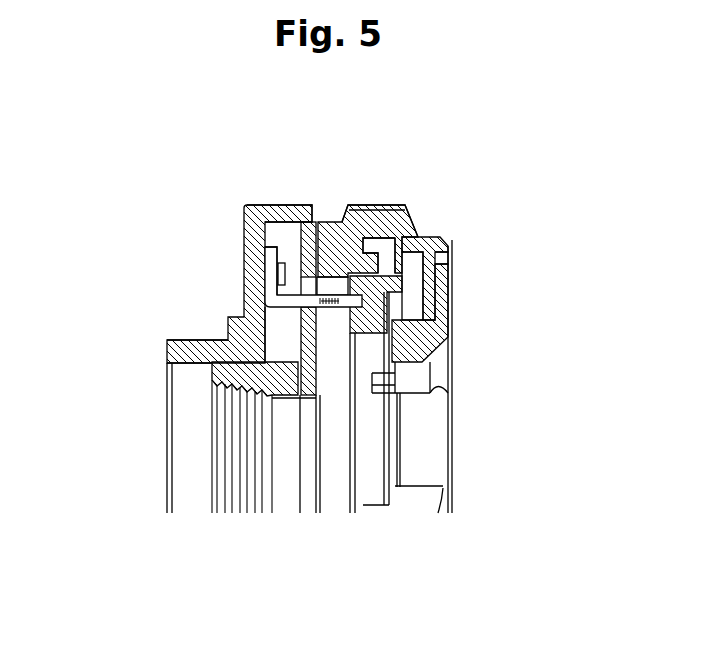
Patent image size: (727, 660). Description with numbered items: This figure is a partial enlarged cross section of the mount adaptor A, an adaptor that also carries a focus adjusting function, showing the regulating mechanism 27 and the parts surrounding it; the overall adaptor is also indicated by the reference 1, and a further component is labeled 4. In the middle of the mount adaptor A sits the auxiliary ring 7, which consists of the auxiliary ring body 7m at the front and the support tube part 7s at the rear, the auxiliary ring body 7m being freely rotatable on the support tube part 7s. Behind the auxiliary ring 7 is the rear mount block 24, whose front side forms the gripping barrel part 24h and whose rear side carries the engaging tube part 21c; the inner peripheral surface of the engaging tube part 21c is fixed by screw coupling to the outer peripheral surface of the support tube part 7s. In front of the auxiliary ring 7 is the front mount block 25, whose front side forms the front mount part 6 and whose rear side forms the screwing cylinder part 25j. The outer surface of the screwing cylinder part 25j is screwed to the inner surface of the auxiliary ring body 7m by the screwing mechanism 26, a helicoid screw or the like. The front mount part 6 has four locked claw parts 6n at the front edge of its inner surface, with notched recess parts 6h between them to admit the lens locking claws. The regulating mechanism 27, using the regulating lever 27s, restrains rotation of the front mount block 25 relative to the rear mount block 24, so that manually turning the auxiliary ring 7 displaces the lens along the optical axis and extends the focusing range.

The mount adaptor A is at (237, 173).
The electromagnetic clutch 1 is at (455, 218).
The armature 4 is at (452, 250).
The front mount part 6 is at (455, 372).
The locked claw parts 6n is at (450, 393).
The notched recess parts 6h is at (423, 468).
The auxiliary ring 7 is at (398, 200).
The auxiliary ring body 7m is at (332, 218).
The support tube part 7s is at (210, 458).
The engaging tube part 21c is at (165, 338).
The rear mount block 24 is at (180, 315).
The gripping barrel part 24h is at (241, 241).
The front mount block 25 is at (463, 325).
The screwing cylinder part 25j is at (345, 455).
The screwing mechanism 26 is at (388, 262).
The regulating mechanism 27 is at (330, 322).
The regulating lever 27s is at (290, 305).